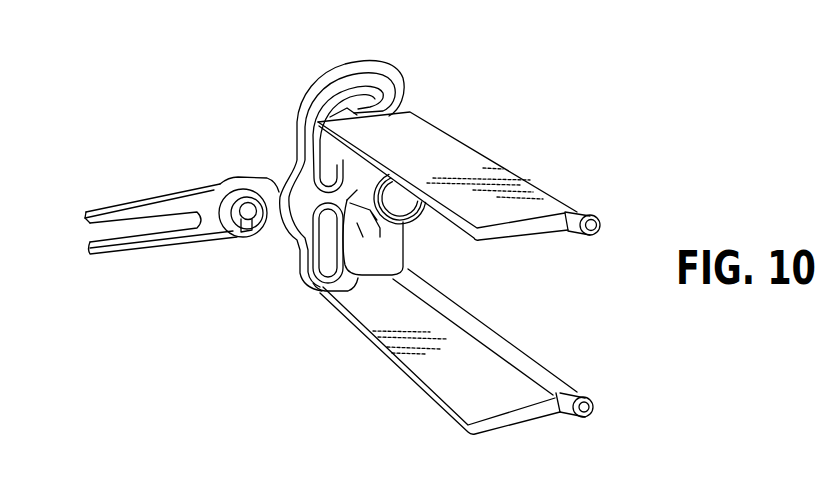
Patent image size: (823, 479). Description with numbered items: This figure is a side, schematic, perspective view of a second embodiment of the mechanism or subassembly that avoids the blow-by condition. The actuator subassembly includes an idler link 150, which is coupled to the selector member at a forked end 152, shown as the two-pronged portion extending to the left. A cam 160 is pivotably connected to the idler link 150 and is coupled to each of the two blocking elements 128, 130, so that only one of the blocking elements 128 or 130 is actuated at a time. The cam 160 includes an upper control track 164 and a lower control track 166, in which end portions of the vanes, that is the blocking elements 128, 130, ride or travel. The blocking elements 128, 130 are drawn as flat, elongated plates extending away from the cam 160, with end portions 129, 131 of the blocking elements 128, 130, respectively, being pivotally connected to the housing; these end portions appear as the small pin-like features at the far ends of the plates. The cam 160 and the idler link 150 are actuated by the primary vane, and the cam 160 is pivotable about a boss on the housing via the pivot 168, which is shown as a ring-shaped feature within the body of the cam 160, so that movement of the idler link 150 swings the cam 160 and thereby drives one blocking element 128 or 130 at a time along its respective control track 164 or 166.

The blocking element 128 is at (508, 173).
The end portion 129 is at (597, 236).
The blocking element 130 is at (494, 369).
The end portion 131 is at (588, 417).
The idler link 150 is at (154, 191).
The forked end 152 is at (97, 208).
The cam 160 is at (361, 202).
The upper control track 164 is at (322, 202).
The lower control track 166 is at (318, 288).
The pivot 168 is at (402, 196).